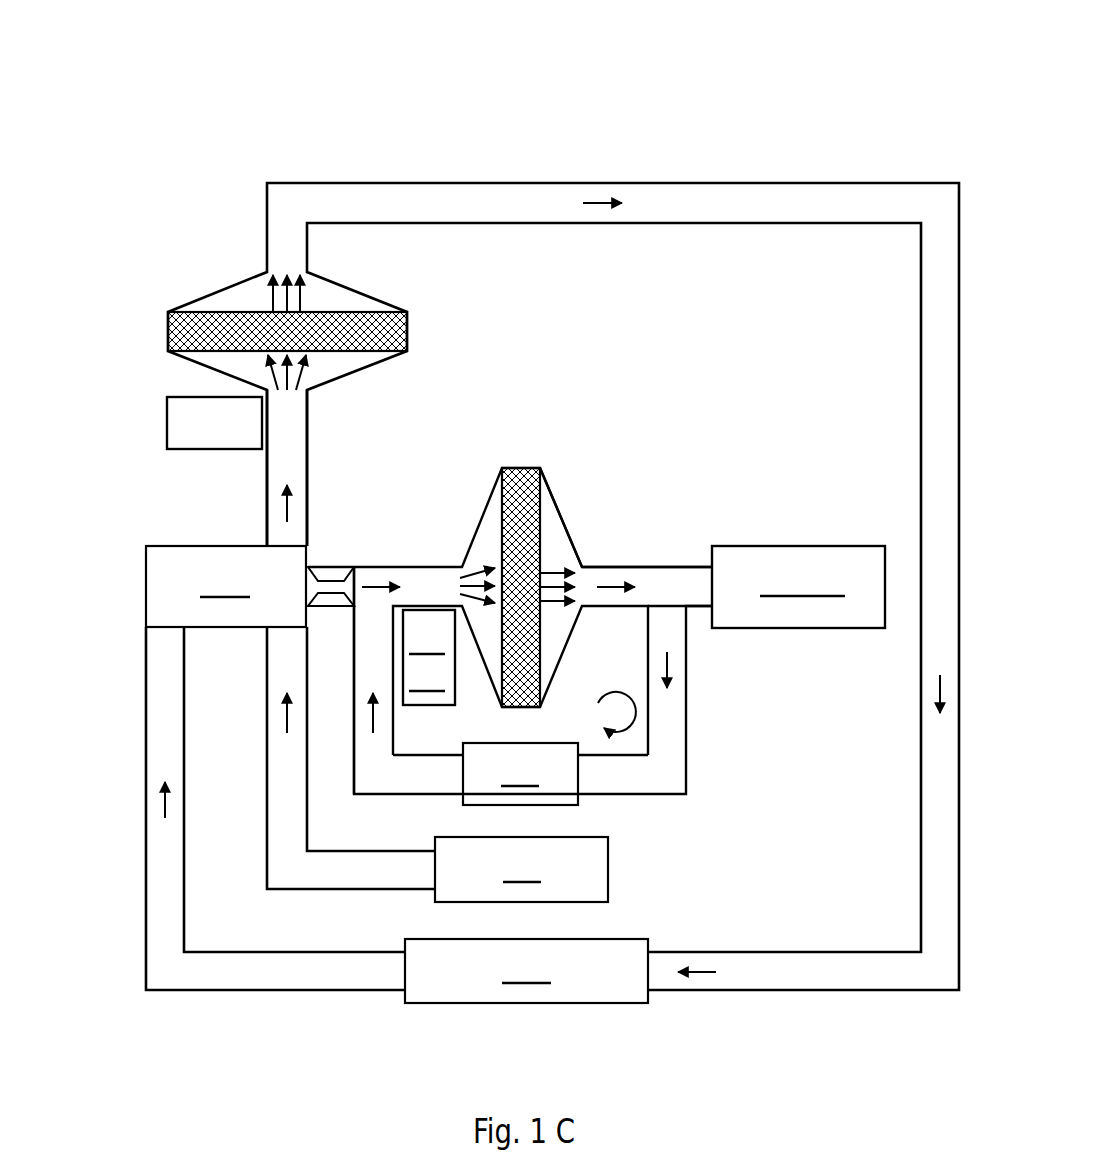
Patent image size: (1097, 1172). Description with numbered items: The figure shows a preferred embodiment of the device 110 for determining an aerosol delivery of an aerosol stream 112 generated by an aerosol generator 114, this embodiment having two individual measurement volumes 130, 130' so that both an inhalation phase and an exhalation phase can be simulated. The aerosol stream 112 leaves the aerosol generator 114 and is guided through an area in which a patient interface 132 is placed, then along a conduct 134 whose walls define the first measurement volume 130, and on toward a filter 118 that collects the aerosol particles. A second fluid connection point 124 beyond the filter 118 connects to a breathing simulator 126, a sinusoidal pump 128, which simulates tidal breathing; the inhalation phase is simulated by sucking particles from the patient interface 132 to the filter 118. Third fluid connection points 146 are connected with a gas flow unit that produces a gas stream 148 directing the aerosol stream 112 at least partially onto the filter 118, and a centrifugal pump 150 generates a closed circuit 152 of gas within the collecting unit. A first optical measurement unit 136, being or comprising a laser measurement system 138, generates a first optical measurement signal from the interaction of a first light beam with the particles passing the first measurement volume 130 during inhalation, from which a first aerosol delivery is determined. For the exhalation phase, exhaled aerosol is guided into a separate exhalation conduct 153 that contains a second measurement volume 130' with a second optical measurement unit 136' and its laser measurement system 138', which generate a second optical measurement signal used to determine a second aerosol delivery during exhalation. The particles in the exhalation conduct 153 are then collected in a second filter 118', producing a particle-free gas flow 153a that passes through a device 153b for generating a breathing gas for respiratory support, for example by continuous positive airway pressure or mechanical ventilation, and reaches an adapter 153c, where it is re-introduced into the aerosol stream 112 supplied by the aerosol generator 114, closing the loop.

The device 110 is at (840, 143).
The aerosol stream 112 is at (285, 506).
The aerosol generator 114 is at (521, 869).
The filter 118 is at (521, 551).
The second filter 118' is at (248, 331).
The second fluid connection point 124 is at (587, 566).
The breathing simulator 126 is at (798, 587).
The sinusoidal pump 128 is at (798, 587).
The measurement volume 130 is at (510, 631).
The second measurement volume 130' is at (322, 468).
The patient interface 132 is at (330, 570).
The conduct 134 is at (377, 572).
The optical measurement unit 136 is at (429, 657).
The laser measurement system 138 is at (429, 657).
The second optical measurement unit 136' is at (152, 423).
The second laser measurement system 138' is at (214, 423).
The third fluid connection points 146 is at (668, 581).
The gas stream 148 is at (378, 724).
The centrifugal pump 150 is at (520, 774).
The closed circuit 152 is at (637, 712).
The exhalation conduct 153 is at (353, 165).
The particle-free gas flow 153a is at (597, 202).
The device for generating a breathing gas 153b is at (526, 971).
The adapter 153c is at (226, 586).